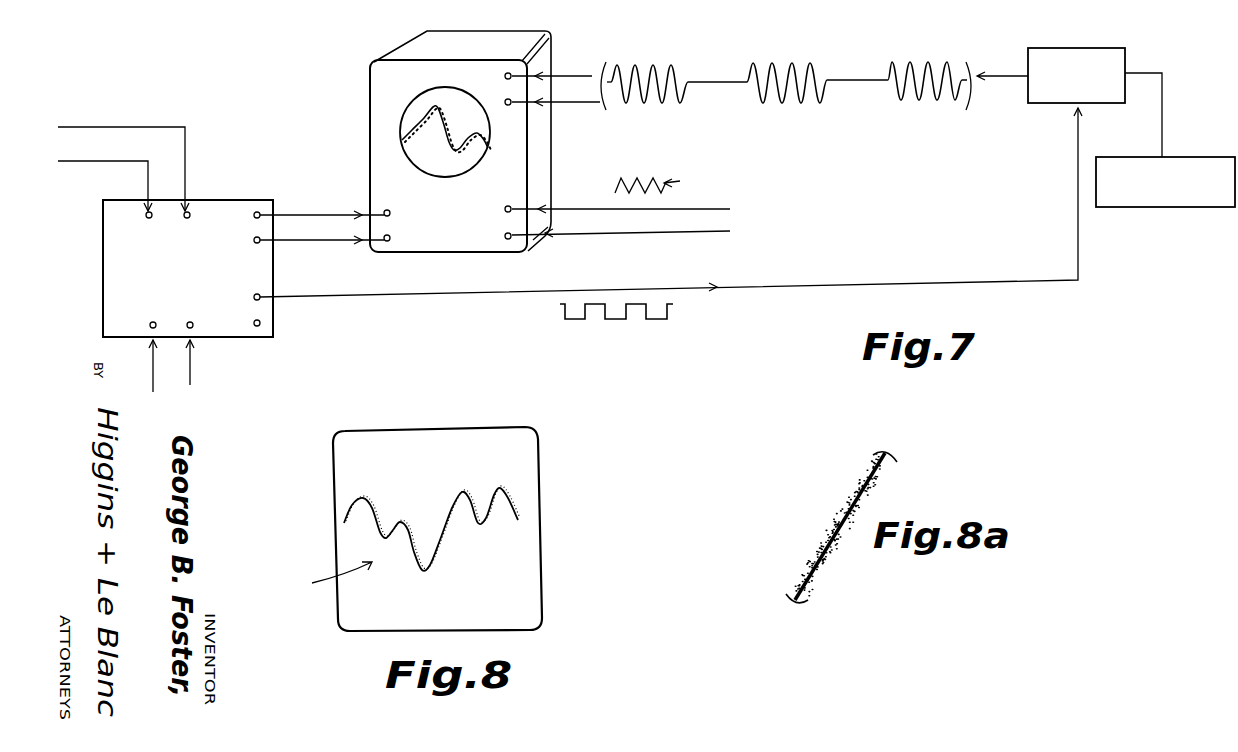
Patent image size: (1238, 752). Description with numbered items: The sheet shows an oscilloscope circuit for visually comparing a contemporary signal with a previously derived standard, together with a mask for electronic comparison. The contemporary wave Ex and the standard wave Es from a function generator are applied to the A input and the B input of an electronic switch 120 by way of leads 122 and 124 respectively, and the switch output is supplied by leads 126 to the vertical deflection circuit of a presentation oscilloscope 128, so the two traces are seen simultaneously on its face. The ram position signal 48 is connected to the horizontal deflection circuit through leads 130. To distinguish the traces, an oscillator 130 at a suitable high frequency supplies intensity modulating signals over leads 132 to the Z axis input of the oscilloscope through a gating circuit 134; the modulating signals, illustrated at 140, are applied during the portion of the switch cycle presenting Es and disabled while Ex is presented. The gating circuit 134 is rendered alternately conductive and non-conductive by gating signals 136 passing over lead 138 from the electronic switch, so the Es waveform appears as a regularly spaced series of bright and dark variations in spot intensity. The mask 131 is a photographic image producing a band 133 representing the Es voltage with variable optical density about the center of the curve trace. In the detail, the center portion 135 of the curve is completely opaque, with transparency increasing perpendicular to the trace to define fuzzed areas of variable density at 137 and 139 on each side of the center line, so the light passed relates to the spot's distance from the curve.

In FIG. 7, the electronic switch 120 is at (237, 204).
In FIG. 7, the lead 122 is at (131, 125).
In FIG. 7, the lead 124 is at (157, 383).
In FIG. 7, the leads 126 is at (322, 210).
In FIG. 7, the presentation oscilloscope 128 is at (380, 84).
In FIG. 7, the oscillator 130 is at (1182, 207).
In FIG. 7, the leads 132 is at (586, 76).
In FIG. 7, the gating circuit 134 is at (1082, 47).
In FIG. 7, the gating signals 136 is at (552, 322).
In FIG. 7, the lead 138 is at (882, 283).
In FIG. 7, the modulating signals 140 is at (793, 63).
In FIG. 7, the ram position signal 48 is at (674, 199).
In FIG. 8, the mask 131 is at (510, 464).
In FIG. 8, the band 133 is at (376, 510).
In FIG. 8A, the center portion 135 is at (832, 531).
In FIG. 8A, the fuzzed area 137 is at (853, 487).
In FIG. 8A, the fuzzed area 139 is at (810, 584).